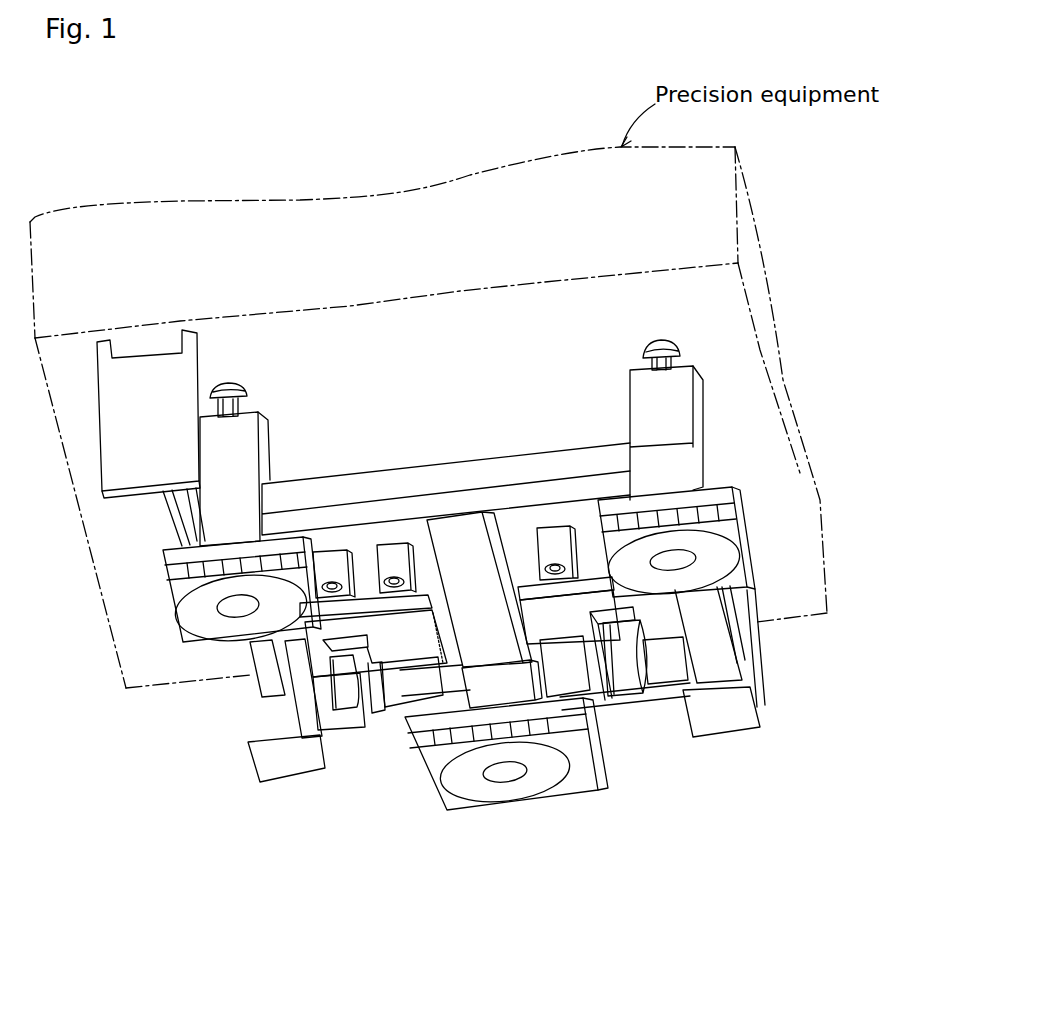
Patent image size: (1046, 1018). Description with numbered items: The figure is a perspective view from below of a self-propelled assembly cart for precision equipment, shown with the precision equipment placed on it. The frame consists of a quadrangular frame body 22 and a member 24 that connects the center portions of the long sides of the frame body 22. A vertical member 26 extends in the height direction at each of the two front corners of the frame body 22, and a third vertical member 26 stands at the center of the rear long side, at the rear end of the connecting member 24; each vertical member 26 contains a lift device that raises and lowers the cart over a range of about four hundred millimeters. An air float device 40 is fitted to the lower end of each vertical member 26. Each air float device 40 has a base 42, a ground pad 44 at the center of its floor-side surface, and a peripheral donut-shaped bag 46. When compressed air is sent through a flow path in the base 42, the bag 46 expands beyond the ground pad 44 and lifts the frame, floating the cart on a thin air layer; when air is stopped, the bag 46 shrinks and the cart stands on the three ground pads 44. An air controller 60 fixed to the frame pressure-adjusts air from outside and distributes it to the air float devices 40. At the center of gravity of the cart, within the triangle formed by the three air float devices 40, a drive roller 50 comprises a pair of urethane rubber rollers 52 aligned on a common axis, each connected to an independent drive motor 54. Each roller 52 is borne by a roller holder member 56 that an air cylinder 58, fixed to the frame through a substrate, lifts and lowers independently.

The frame body 22 is at (540, 470).
The member 24 is at (455, 540).
The vertical member 26 is at (248, 462).
The air float device 40 is at (464, 692).
The base 42 is at (173, 592).
The ground pad 44 is at (238, 607).
The donut-shaped bag 46 is at (207, 623).
The drive roller 50 is at (517, 791).
The roller 52 is at (352, 715).
The drive motor 54 is at (402, 685).
The roller holder member 56 is at (608, 695).
The air cylinder 58 is at (390, 555).
The air controller 60 is at (117, 442).